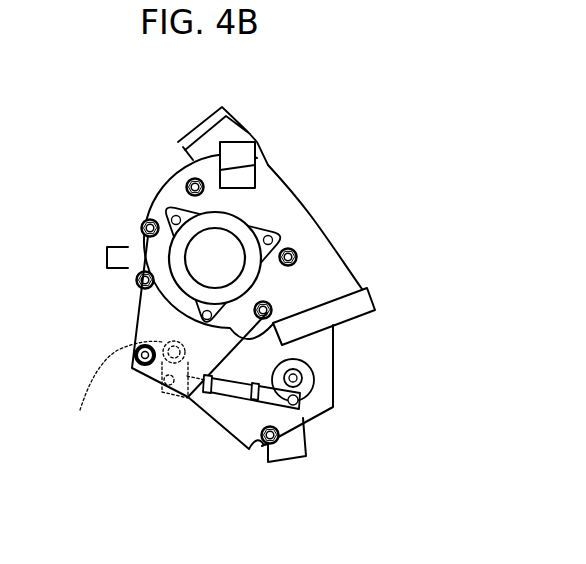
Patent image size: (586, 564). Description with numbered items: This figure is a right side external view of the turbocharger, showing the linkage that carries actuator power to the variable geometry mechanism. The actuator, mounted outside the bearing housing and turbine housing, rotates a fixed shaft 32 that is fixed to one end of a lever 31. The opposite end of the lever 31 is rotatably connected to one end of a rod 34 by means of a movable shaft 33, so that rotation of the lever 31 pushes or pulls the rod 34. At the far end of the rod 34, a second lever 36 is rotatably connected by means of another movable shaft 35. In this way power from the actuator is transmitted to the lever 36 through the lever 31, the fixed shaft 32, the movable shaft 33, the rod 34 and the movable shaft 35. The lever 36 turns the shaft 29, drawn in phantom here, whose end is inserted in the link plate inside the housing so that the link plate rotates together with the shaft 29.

The shaft 29 is at (80, 410).
The lever 31 is at (303, 381).
The fixed shaft 32 is at (306, 387).
The movable shaft 33 is at (316, 384).
The rod 34 is at (224, 400).
The movable shaft 35 is at (181, 400).
The lever 36 is at (143, 368).